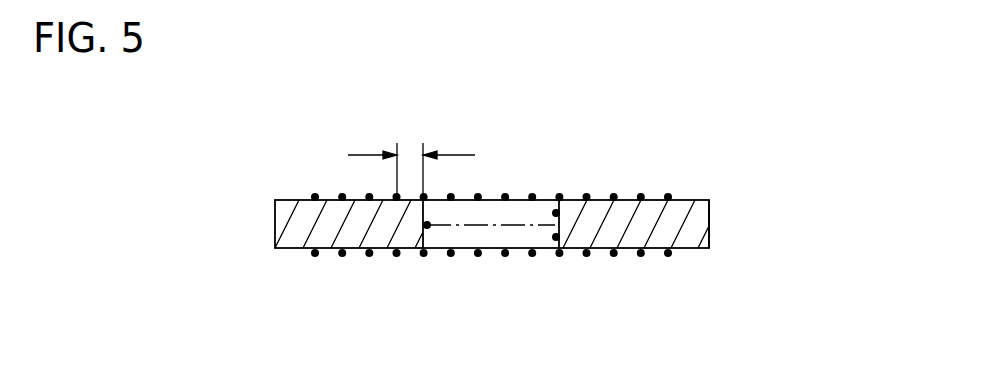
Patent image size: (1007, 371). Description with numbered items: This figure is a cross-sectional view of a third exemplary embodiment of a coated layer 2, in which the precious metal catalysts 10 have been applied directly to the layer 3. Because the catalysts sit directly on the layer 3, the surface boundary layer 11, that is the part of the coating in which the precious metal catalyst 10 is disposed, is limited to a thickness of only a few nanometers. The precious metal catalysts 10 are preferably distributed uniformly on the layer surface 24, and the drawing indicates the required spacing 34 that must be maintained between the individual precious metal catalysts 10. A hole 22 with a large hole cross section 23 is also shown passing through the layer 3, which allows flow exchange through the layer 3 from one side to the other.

The component assembly 2 is at (330, 180).
The layer 3 is at (685, 227).
The precious metal catalysts 10 is at (668, 253).
The surface boundary layer 11 is at (615, 197).
The hole 22 is at (515, 210).
The hole cross section 23 is at (532, 227).
The layer surface 24 is at (697, 197).
The spacing 34 is at (410, 153).